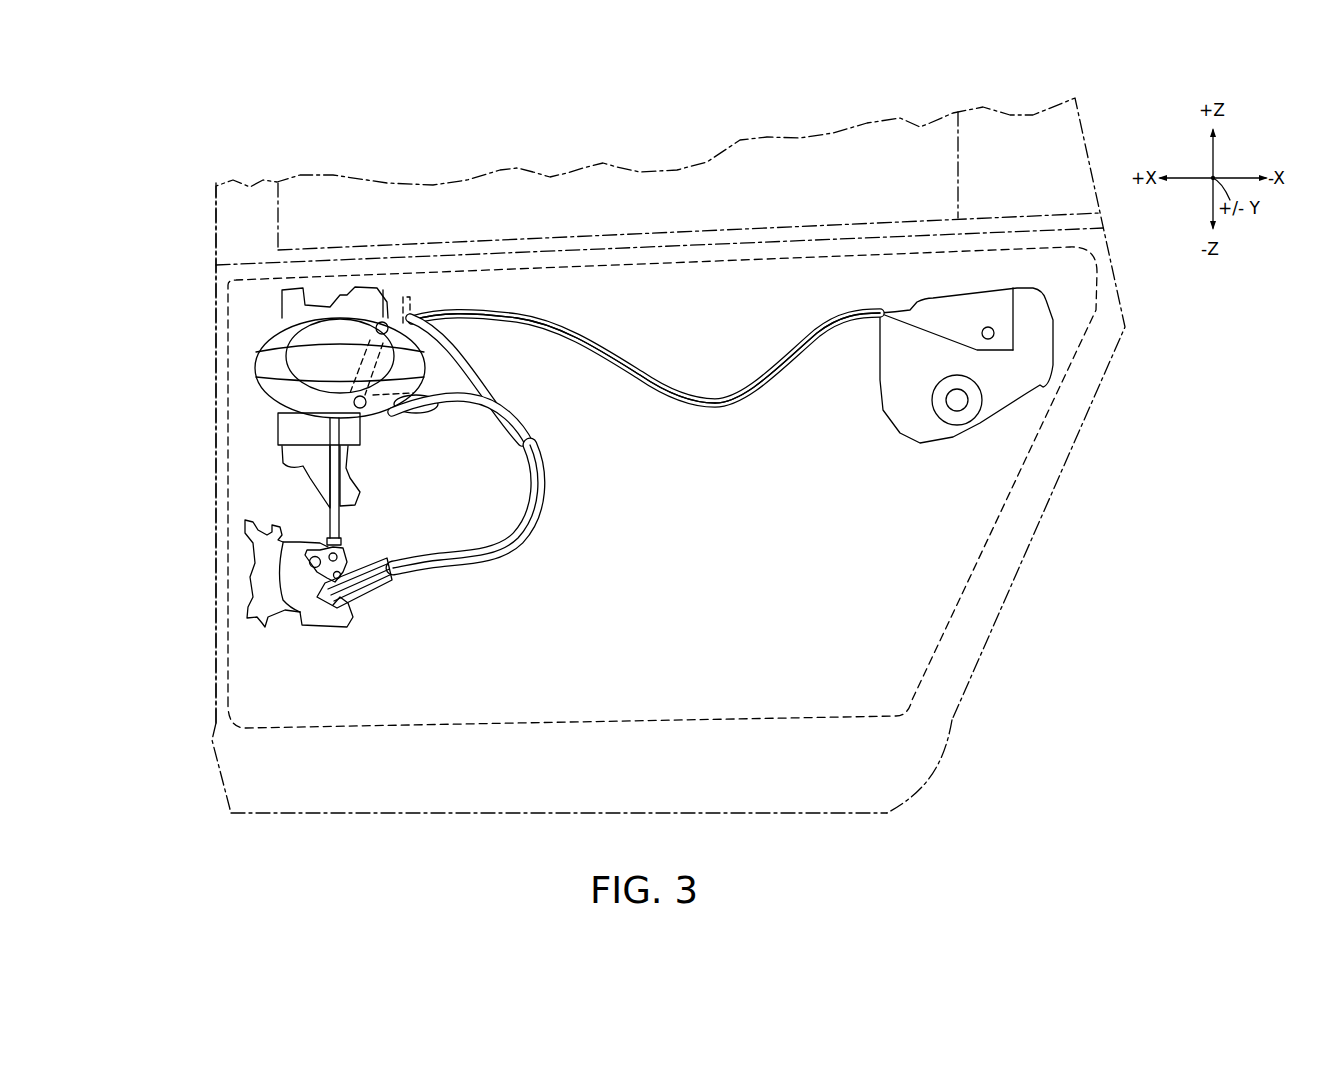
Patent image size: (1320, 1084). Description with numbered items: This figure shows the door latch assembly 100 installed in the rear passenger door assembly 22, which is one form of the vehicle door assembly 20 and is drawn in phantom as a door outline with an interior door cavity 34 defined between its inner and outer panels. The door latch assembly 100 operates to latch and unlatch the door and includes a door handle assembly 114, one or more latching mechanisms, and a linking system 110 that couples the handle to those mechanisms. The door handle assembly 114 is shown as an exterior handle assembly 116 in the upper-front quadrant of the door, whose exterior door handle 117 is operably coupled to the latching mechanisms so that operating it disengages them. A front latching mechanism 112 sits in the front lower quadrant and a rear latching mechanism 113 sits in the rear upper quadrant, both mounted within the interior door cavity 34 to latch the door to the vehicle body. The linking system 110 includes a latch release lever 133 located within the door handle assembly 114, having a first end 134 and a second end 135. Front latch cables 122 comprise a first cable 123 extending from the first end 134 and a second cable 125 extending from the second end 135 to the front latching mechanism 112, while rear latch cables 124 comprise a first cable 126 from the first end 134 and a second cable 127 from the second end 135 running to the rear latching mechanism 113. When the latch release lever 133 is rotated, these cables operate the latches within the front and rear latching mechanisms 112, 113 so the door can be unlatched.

The vehicle door assembly 20 is at (621, 485).
The rear passenger door assembly 22 is at (797, 814).
The interior door cavity 34 is at (216, 420).
The door latch assembly 100 is at (659, 239).
The linking system 110 is at (662, 487).
The front latching mechanism 112 is at (261, 573).
The rear latching mechanism 113 is at (1054, 320).
The door handle assembly 114 is at (366, 296).
The exterior handle assembly 116 is at (290, 442).
The exterior door handle 117 is at (300, 346).
The front latch cables 122 is at (476, 533).
The first cable 123 is at (530, 420).
The rear latch cables 124 is at (646, 393).
The second cable 125 is at (517, 500).
The first cable 126 is at (574, 332).
The second cable 127 is at (760, 387).
The latch release lever 133 is at (348, 331).
The first end 134 is at (405, 322).
The second end 135 is at (354, 398).